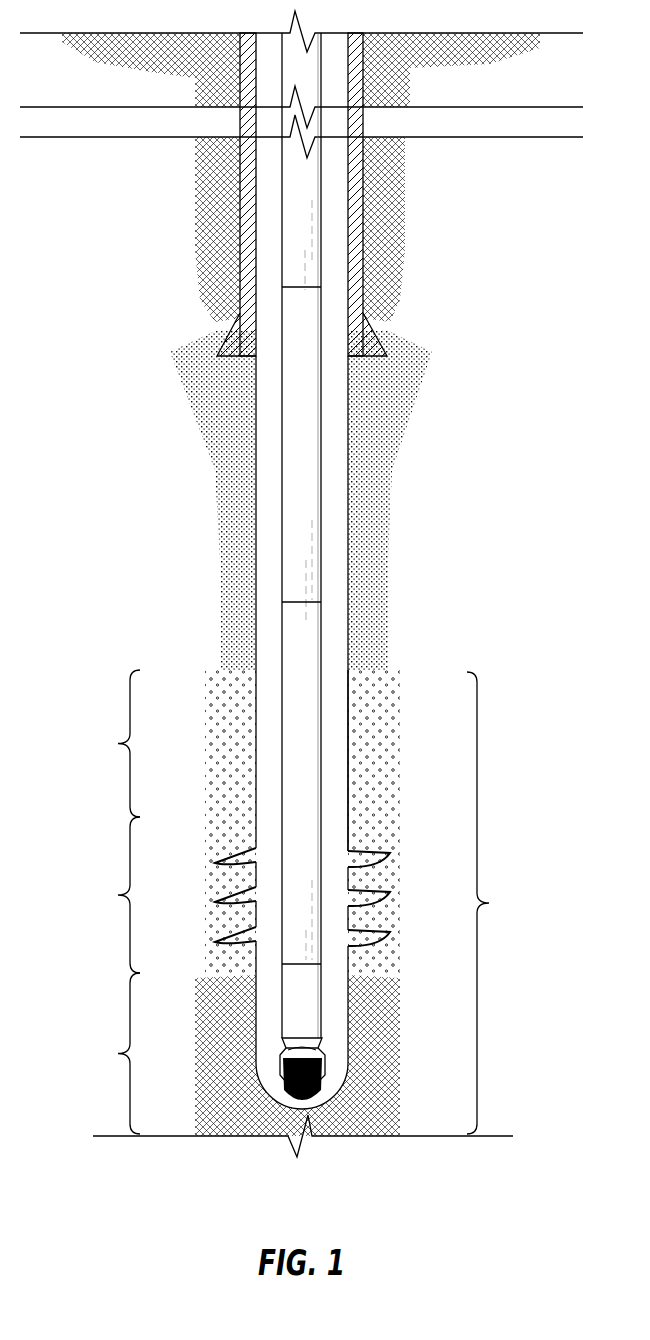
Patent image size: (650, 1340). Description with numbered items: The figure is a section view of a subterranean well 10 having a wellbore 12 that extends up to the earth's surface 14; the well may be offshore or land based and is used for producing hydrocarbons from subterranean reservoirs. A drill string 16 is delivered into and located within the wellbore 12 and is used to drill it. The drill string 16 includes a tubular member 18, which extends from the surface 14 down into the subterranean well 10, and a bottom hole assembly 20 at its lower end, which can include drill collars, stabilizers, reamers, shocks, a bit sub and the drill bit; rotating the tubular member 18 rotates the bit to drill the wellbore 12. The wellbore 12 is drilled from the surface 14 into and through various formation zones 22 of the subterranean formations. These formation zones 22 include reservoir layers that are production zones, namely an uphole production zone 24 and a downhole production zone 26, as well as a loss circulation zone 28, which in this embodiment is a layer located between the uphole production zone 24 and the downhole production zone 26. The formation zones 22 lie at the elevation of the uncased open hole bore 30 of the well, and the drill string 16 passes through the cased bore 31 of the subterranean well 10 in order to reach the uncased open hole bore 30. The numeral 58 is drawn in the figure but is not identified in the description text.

The subterranean well 10 is at (360, 444).
The wellbore 12 is at (335, 473).
The earth's surface 14 is at (460, 48).
The drill string 16 is at (315, 203).
The tubular member 18 is at (288, 447).
The bottom hole assembly 20 is at (274, 1058).
The formation zones 22 is at (499, 903).
The uphole production zone 24 is at (112, 743).
The downhole production zone 26 is at (112, 1053).
The loss circulation zone 28 is at (112, 895).
The uncased open hole bore 30 is at (335, 733).
The cased bore 31 is at (272, 228).
The perforations 58 is at (332, 829).